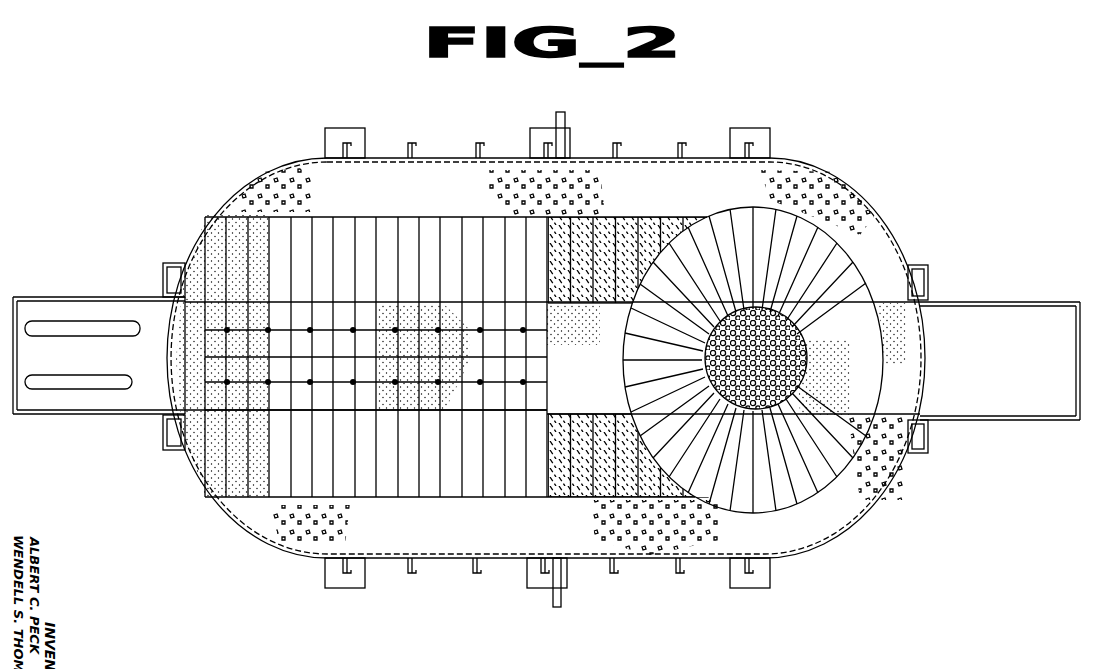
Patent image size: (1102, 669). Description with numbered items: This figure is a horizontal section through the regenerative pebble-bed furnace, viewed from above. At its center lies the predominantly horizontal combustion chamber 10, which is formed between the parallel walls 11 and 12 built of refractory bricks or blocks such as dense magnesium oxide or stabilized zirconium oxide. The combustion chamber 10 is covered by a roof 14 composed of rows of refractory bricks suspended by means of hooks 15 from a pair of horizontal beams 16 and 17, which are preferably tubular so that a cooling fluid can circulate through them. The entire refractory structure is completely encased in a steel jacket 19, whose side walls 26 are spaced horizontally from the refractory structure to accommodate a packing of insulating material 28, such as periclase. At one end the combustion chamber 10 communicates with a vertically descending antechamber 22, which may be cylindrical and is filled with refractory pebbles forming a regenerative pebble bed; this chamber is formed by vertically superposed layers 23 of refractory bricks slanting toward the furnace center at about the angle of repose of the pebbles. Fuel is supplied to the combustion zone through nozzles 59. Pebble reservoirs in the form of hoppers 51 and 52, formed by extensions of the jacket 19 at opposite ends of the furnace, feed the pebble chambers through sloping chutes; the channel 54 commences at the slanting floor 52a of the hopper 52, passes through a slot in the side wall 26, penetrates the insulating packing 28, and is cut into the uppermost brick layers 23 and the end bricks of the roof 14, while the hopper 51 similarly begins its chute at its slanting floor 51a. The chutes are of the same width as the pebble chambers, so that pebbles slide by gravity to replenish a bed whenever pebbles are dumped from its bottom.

The combustion chamber 10 is at (600, 369).
The wall 11 is at (563, 235).
The wall 12 is at (575, 487).
The roof 14 is at (538, 407).
The hooks 15 is at (229, 332).
The horizontal beam 16 is at (65, 378).
The horizontal beam 17 is at (117, 329).
The steel jacket 19 is at (830, 143).
The antechamber 22 is at (772, 362).
The layers of refractory bricks 23 is at (764, 225).
The side wall 26 is at (187, 467).
The insulating material 28 is at (643, 187).
The hopper 51 is at (92, 315).
The slanting floor 51a is at (146, 365).
The hopper 52 is at (975, 330).
The slanting floor 52a is at (1030, 372).
The channel 54 is at (855, 360).
The nozzles 59 is at (562, 118).